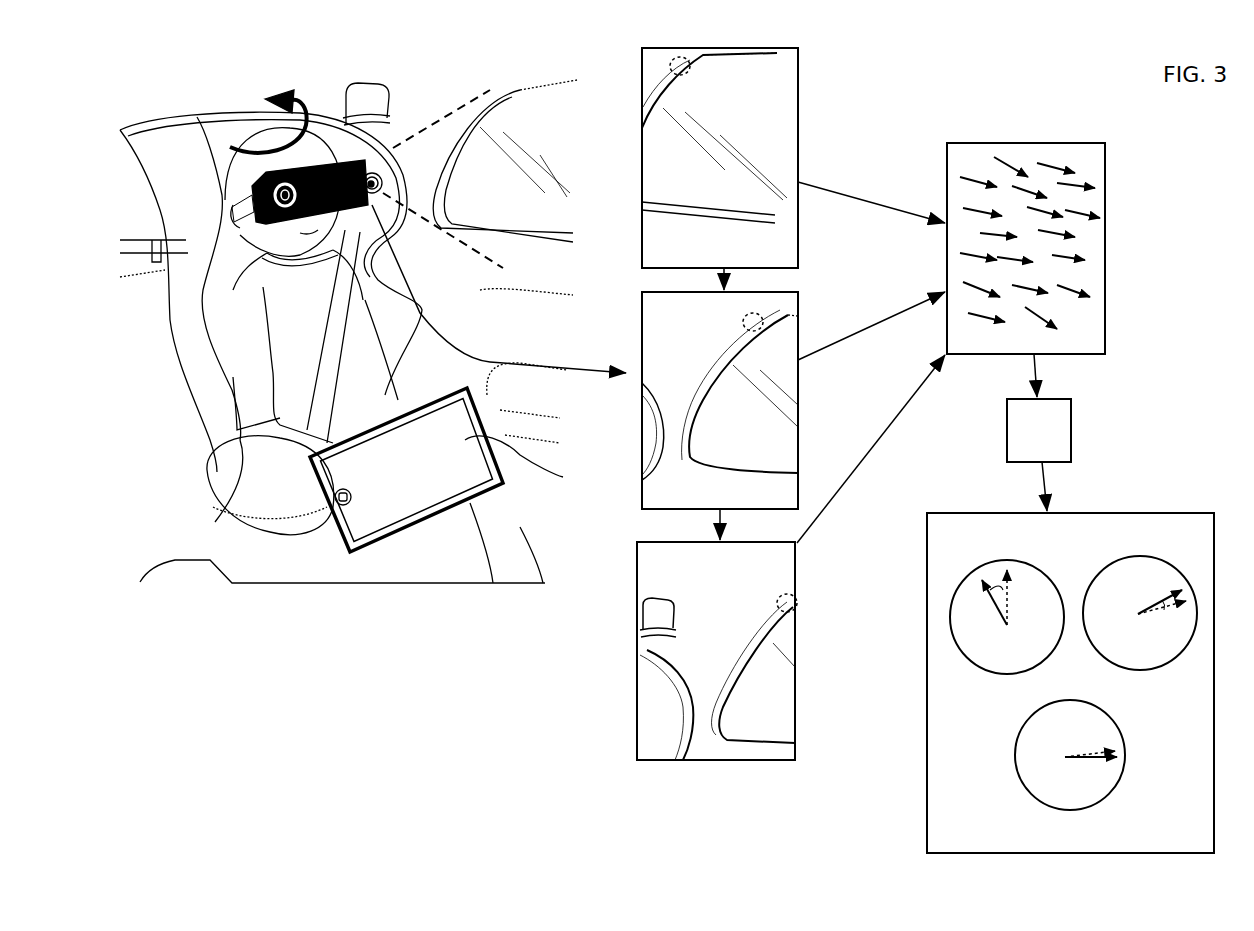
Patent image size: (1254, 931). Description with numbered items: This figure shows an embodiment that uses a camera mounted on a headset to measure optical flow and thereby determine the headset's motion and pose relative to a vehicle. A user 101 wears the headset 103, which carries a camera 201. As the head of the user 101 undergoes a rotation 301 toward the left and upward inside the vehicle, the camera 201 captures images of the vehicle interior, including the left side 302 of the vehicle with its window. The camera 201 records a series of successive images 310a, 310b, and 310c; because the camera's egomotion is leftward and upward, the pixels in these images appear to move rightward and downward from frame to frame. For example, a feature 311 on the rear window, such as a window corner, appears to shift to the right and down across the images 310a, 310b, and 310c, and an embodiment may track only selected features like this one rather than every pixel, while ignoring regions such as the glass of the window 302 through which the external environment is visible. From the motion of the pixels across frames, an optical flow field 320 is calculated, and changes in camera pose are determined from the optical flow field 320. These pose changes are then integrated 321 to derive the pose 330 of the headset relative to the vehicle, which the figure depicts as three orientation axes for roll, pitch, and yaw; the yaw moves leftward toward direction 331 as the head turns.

The user 101 is at (257, 367).
The headset 103 is at (338, 167).
The camera 201 is at (372, 172).
The rotation 301 is at (257, 148).
The left side of the vehicle 302 is at (497, 163).
The first image 310a is at (642, 220).
The second image 310b is at (642, 497).
The third image 310c is at (637, 728).
The feature on the rear window 311 is at (687, 78).
The optical flow field 320 is at (1105, 232).
The integration 321 is at (1071, 428).
The pose 330 is at (927, 733).
The yaw direction 331 is at (953, 598).